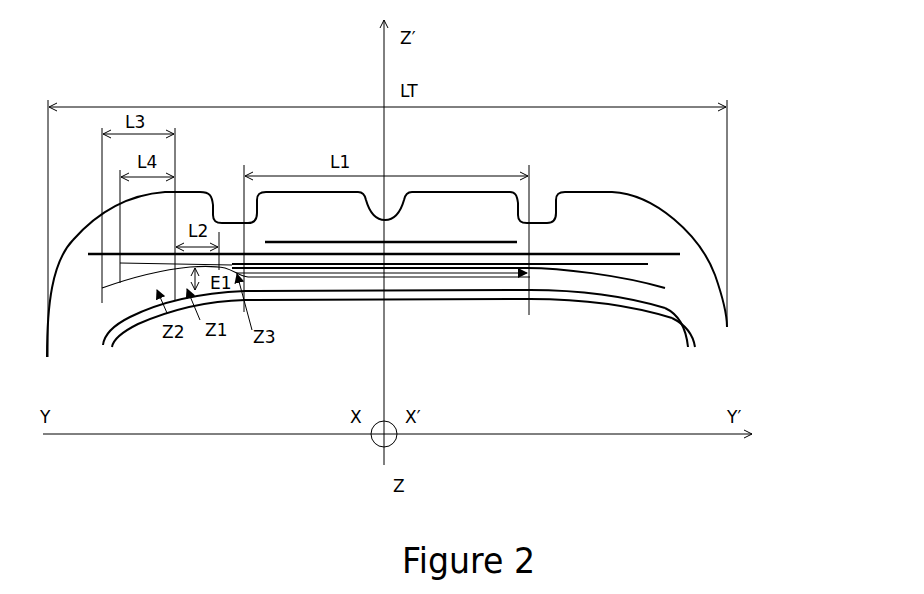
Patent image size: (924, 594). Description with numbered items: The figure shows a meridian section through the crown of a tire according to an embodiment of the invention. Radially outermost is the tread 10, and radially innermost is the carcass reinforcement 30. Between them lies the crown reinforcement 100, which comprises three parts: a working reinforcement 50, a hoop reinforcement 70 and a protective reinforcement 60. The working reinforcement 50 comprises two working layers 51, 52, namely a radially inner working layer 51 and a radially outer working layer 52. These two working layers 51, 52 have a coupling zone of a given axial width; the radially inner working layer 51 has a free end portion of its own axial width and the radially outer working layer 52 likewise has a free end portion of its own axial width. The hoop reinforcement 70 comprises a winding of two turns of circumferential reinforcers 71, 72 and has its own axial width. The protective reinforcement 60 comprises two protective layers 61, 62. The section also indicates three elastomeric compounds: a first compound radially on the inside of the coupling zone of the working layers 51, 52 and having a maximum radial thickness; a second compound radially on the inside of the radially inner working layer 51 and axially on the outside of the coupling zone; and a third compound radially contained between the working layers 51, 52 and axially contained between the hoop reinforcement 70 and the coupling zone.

The tread 10 is at (508, 184).
The carcass reinforcement 30 is at (704, 345).
The working reinforcement 50 is at (468, 244).
The radially inner working layer 51 is at (659, 277).
The radially outer working layer 52 is at (629, 257).
The protective reinforcement 60 is at (452, 188).
The protective layer 61 is at (557, 245).
The protective layer 62 is at (462, 239).
The hoop reinforcement 70 is at (460, 312).
The circumferential reinforcer 71 is at (538, 281).
The circumferential reinforcer 72 is at (534, 275).
The crown reinforcement 100 is at (471, 234).